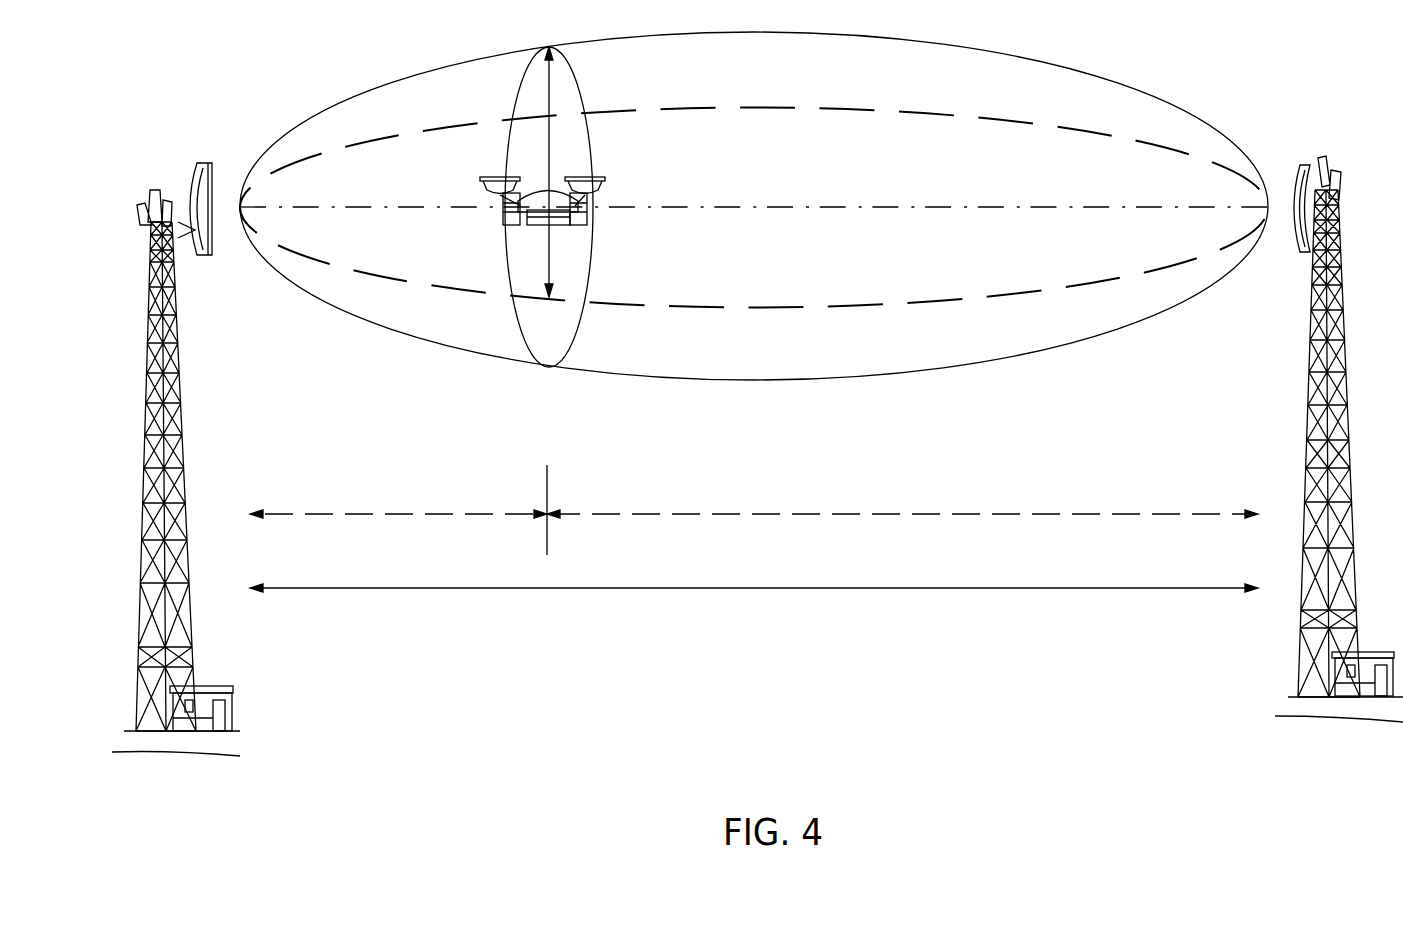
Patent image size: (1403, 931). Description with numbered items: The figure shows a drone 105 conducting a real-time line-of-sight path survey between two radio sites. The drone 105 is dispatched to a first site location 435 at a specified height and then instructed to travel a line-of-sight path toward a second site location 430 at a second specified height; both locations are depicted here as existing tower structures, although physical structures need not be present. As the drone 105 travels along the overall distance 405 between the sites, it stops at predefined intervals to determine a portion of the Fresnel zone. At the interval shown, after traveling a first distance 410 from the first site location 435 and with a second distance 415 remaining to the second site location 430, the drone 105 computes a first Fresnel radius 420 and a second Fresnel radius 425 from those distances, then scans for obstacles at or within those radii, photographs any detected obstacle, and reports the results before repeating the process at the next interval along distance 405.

The drone 105 is at (480, 196).
The distance 405 is at (803, 578).
The first distance 410 is at (433, 503).
The second distance 415 is at (947, 503).
The first Fresnel radius 420 is at (553, 257).
The second Fresnel radius 425 is at (552, 134).
The second site location 430 is at (1325, 158).
The first site location 435 is at (165, 190).